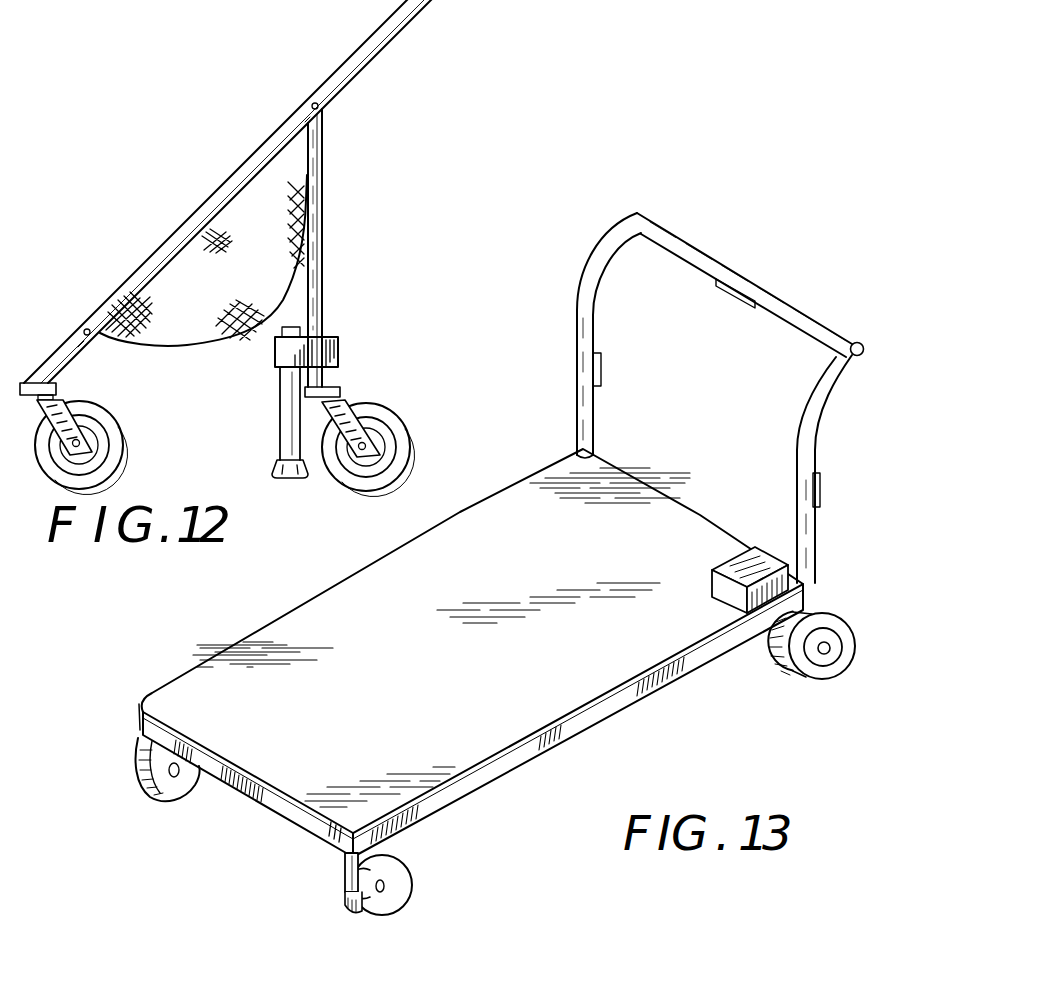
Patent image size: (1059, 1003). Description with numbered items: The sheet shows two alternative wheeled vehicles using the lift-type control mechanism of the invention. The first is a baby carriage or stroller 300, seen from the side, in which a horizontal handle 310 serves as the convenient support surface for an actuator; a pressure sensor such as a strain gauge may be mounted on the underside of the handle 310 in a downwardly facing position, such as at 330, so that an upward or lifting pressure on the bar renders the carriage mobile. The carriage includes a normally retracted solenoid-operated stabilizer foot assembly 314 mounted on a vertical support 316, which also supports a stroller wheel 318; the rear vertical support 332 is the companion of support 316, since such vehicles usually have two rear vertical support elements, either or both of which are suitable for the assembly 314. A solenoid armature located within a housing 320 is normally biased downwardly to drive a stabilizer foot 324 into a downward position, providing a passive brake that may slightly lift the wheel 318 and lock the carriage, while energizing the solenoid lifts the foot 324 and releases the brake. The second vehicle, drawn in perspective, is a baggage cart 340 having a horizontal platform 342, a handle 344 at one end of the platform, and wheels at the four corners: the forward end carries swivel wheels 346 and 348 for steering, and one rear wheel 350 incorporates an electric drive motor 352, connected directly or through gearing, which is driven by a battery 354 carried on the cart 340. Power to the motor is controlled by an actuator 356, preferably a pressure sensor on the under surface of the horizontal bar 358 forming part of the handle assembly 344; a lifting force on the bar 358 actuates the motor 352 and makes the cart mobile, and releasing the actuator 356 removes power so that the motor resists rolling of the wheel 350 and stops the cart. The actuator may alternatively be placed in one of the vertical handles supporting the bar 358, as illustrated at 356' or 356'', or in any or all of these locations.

In FIG. 12, the baby carriage or stroller 300 is at (294, 248).
In FIG. 12, the horizontal handle 310 is at (472, 0).
In FIG. 12, the pressure sensor location 330 is at (452, 0).
In FIG. 12, the vertical post 332 is at (326, 211).
In FIG. 12, the vertical support 316 is at (323, 272).
In FIG. 12, the stabilizer foot assembly 314 is at (331, 332).
In FIG. 12, the housing 320 is at (334, 354).
In FIG. 12, the stabilizer foot 324 is at (288, 410).
In FIG. 12, the stroller wheel 318 is at (408, 440).
In FIG. 13, the baggage cart 340 is at (503, 551).
In FIG. 13, the horizontal platform 342 is at (582, 723).
In FIG. 13, the handle 344 is at (735, 385).
In FIG. 13, the swivel wheel 346 is at (160, 806).
In FIG. 13, the swivel wheel 348 is at (410, 877).
In FIG. 13, the rear wheel 350 is at (781, 681).
In FIG. 13, the electric drive motor 352 is at (828, 686).
In FIG. 13, the battery 354 is at (756, 553).
In FIG. 13, the actuator 356 is at (696, 299).
In FIG. 13, the alternative actuator location 356' is at (645, 369).
In FIG. 13, the alternative actuator location 356'' is at (849, 511).
In FIG. 13, the horizontal bar 358 is at (757, 278).